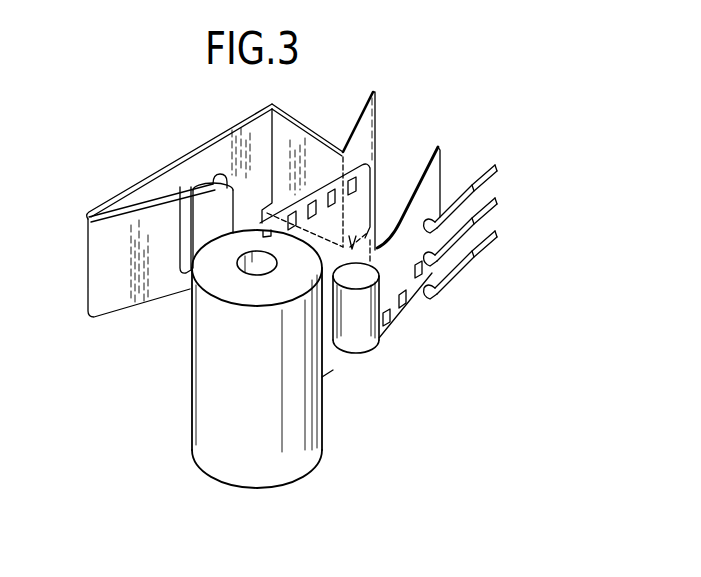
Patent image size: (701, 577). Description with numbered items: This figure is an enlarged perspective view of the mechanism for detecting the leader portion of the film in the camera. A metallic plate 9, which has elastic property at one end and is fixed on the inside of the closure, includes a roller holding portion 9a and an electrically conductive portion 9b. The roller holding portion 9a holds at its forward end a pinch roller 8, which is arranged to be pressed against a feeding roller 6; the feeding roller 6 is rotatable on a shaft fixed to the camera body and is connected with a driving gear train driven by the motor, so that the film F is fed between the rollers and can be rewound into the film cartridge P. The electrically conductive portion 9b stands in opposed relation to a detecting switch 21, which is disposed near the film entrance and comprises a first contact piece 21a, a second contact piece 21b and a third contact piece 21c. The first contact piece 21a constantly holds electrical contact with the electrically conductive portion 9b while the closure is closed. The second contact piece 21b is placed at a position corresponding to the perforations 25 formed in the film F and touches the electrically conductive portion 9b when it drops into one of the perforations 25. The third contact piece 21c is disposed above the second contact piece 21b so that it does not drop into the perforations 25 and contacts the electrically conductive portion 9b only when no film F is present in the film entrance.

The metallic plate 9 is at (212, 152).
The roller holding portion 9a is at (167, 263).
The electrically conductive portion 9b is at (367, 138).
The pinch roller 8 is at (200, 222).
The film cartridge P is at (198, 423).
The feeding roller 6 is at (362, 342).
The perforations 25 is at (403, 297).
The film F is at (436, 170).
The detecting switch 21 is at (508, 226).
The first contact piece 21a is at (485, 259).
The second contact piece 21b is at (497, 200).
The third contact piece 21c is at (497, 167).